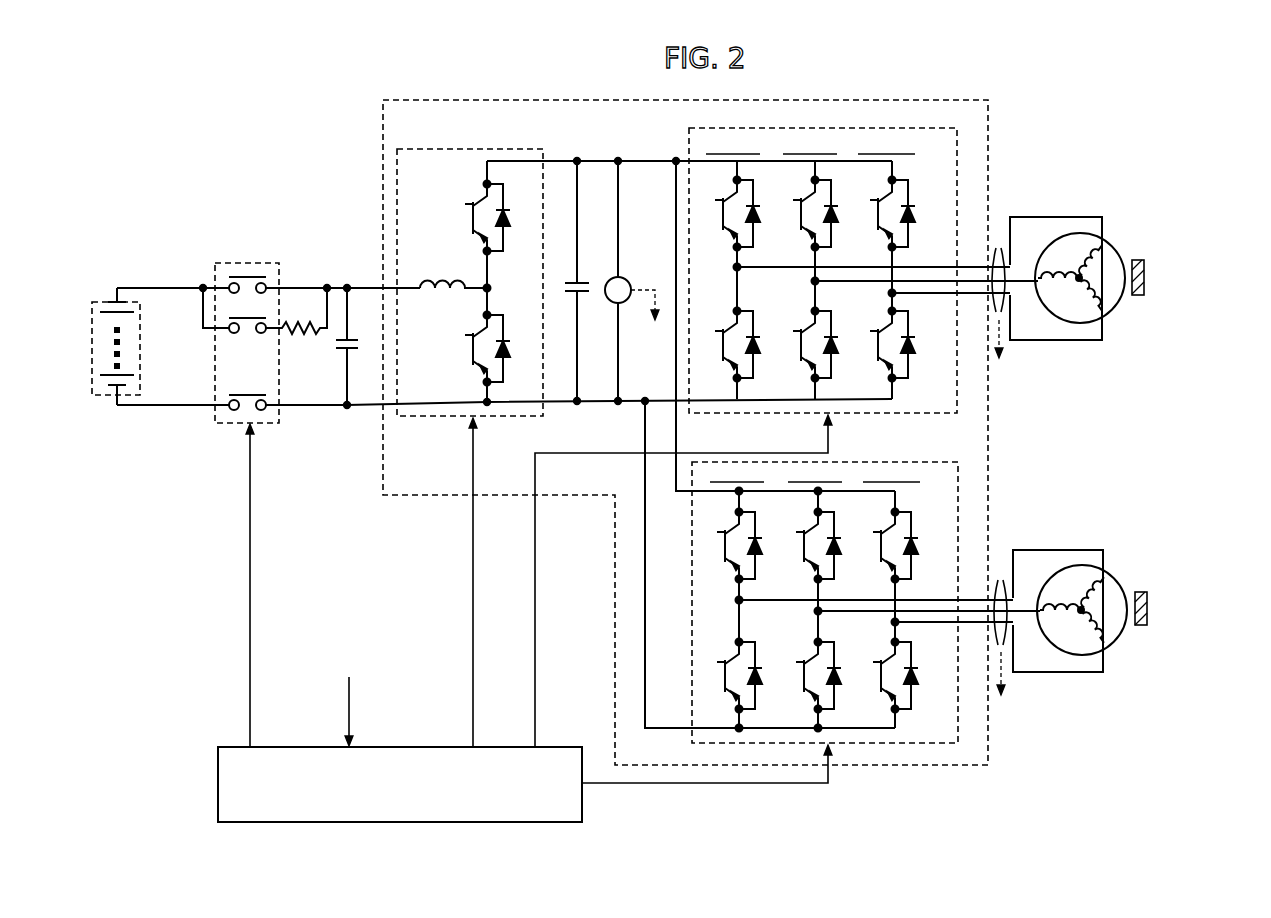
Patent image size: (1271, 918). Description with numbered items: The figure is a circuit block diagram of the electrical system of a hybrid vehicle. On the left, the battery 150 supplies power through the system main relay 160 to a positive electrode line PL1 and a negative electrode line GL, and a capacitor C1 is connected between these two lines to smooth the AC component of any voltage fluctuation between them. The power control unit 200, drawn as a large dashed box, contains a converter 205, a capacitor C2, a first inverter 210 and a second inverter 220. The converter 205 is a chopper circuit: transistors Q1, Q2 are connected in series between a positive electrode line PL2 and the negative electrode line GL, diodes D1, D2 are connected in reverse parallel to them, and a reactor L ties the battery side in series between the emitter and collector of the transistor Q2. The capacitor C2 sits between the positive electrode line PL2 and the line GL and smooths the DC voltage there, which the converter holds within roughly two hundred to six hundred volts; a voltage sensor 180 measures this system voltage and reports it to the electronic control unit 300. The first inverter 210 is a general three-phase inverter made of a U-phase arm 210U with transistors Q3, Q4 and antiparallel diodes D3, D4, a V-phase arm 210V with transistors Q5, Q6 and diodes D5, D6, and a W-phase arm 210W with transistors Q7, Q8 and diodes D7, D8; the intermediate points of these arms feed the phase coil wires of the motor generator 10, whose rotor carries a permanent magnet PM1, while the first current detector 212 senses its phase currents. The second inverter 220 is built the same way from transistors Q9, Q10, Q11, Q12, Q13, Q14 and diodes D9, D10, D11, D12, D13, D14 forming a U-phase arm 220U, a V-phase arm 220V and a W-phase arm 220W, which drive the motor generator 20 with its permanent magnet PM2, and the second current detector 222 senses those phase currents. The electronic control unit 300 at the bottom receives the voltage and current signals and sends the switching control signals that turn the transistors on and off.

The battery 150 is at (103, 301).
The SMR 160 is at (256, 265).
The positive electrode line PL1 is at (163, 286).
The capacitor C1 is at (349, 338).
The negative electrode line GL is at (598, 405).
The PCU 200 is at (990, 112).
The converter 205 is at (476, 269).
The reactor L is at (437, 283).
The transistor Q1 is at (474, 202).
The transistor Q2 is at (474, 333).
The diode D1 is at (508, 222).
The diode D2 is at (508, 353).
The positive electrode line PL2 is at (595, 159).
The capacitor C2 is at (582, 280).
The voltage sensor 180 is at (629, 279).
The first inverter 210 is at (899, 129).
The U-phase arm 210U is at (745, 265).
The V-phase arm 210V is at (823, 265).
The W-phase arm 210W is at (899, 265).
The transistor Q3 is at (723, 200).
The transistor Q4 is at (723, 331).
The transistor Q5 is at (801, 200).
The transistor Q6 is at (801, 331).
The transistor Q7 is at (878, 200).
The transistor Q8 is at (878, 331).
The antiparallel diode D3 is at (755, 218).
The antiparallel diode D4 is at (755, 349).
The antiparallel diode D5 is at (833, 218).
The antiparallel diode D6 is at (833, 349).
The antiparallel diode D7 is at (911, 218).
The antiparallel diode D8 is at (911, 349).
The first current detector 212 is at (997, 250).
The motor generator 10 is at (1112, 313).
The permanent magnet PM1 is at (1146, 277).
The second inverter 220 is at (901, 463).
The U-phase arm 220U is at (747, 595).
The V-phase arm 220V is at (827, 595).
The W-phase arm 220W is at (904, 593).
The transistor Q9 is at (725, 532).
The transistor Q10 is at (725, 662).
The transistor Q11 is at (804, 532).
The transistor Q12 is at (804, 662).
The transistor Q13 is at (881, 532).
The transistor Q14 is at (881, 662).
The diode D9 is at (757, 550).
The diode D10 is at (757, 680).
The diode D11 is at (836, 550).
The diode D12 is at (836, 680).
The diode D13 is at (913, 550).
The diode D14 is at (913, 680).
The second current detector 222 is at (999, 582).
The motor generator 20 is at (1112, 582).
The permanent magnet PM2 is at (1149, 608).
The ECU 300 is at (552, 747).